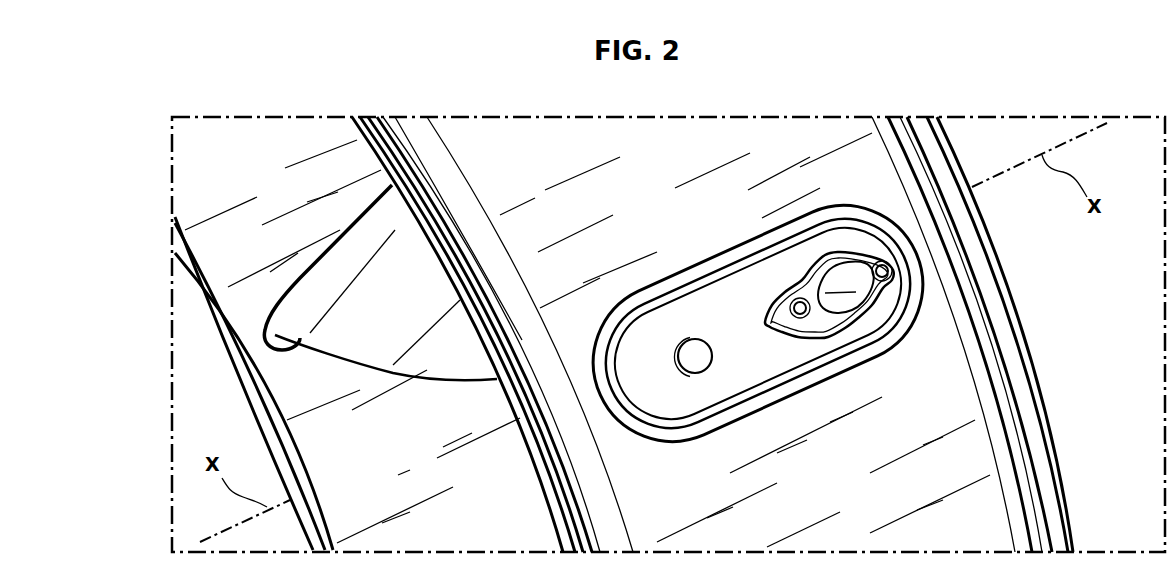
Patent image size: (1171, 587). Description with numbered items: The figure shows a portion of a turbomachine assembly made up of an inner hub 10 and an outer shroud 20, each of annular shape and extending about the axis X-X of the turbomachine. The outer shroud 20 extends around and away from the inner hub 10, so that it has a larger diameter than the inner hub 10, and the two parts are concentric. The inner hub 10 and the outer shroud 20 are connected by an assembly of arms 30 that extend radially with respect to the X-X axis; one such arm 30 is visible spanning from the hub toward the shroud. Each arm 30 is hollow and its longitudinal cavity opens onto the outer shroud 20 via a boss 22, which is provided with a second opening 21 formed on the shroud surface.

The inner hub 10 is at (434, 469).
The outer shroud 20 is at (847, 468).
The second opening 21 is at (850, 286).
The boss 22 is at (808, 296).
The arm 30 is at (403, 283).